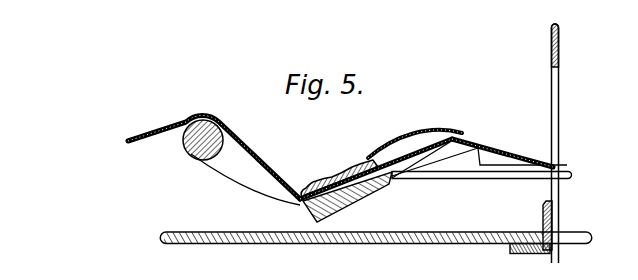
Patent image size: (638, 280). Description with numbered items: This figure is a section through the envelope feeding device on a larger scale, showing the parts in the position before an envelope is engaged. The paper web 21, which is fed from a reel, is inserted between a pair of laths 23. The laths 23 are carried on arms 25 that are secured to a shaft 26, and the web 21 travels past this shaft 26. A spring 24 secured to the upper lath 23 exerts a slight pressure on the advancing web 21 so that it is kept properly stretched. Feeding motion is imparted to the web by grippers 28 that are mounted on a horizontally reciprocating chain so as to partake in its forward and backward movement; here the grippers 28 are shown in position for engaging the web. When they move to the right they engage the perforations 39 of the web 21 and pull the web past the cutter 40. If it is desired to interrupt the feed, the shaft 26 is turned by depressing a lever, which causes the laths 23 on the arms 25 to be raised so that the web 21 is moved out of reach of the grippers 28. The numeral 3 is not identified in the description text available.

The paper web 21 is at (140, 137).
The shaft 26 is at (221, 124).
The arms 25 is at (230, 178).
The spring 24 is at (402, 136).
The laths 23 is at (345, 166).
The grippers 28 is at (464, 177).
The perforations 39 is at (512, 152).
The cutter 40 is at (560, 43).
The base plate 3 is at (575, 244).